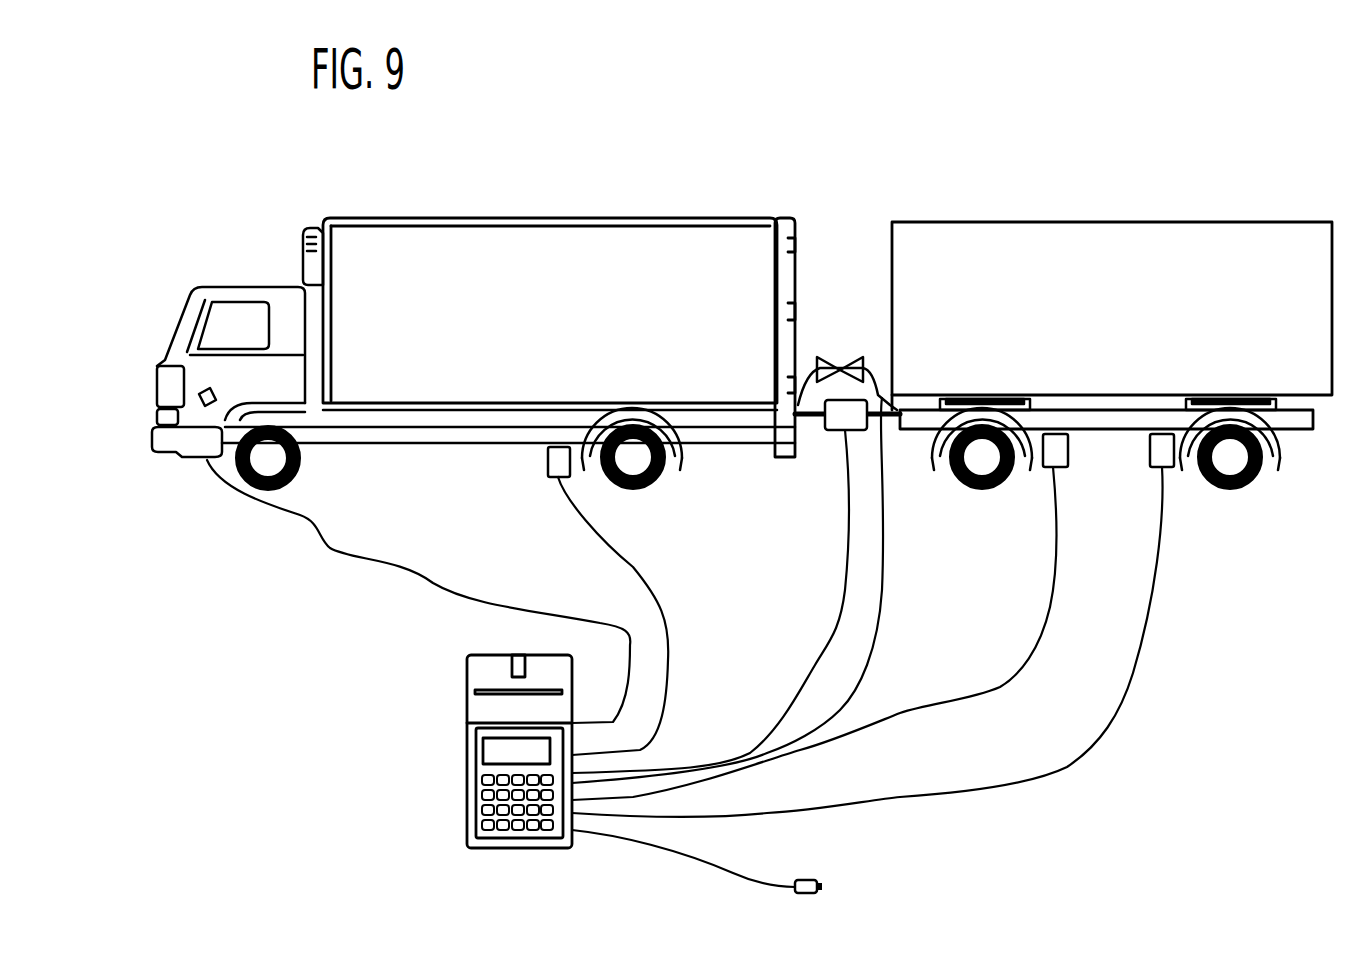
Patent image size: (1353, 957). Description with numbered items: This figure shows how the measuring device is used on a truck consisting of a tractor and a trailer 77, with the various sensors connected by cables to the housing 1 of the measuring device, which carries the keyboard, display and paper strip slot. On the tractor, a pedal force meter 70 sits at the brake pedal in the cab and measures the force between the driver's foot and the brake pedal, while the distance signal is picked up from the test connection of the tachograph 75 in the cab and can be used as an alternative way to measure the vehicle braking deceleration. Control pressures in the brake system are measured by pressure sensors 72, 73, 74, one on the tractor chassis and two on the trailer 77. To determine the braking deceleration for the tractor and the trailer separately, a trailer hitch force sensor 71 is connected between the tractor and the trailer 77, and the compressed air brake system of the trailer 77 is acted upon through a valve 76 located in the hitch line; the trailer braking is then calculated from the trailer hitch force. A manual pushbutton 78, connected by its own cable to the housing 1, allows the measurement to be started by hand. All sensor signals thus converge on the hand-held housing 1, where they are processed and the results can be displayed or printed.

The housing 1 is at (467, 678).
The pedal force meter 70 is at (207, 408).
The trailer hitch force sensor 71 is at (832, 433).
The pressure sensor 72 is at (545, 472).
The pressure sensor 73 is at (1060, 460).
The pressure sensor 74 is at (1170, 463).
The tachograph 75 is at (198, 350).
The valve 76 is at (842, 362).
The trailer 77 is at (981, 430).
The manual pushbutton 78 is at (808, 873).